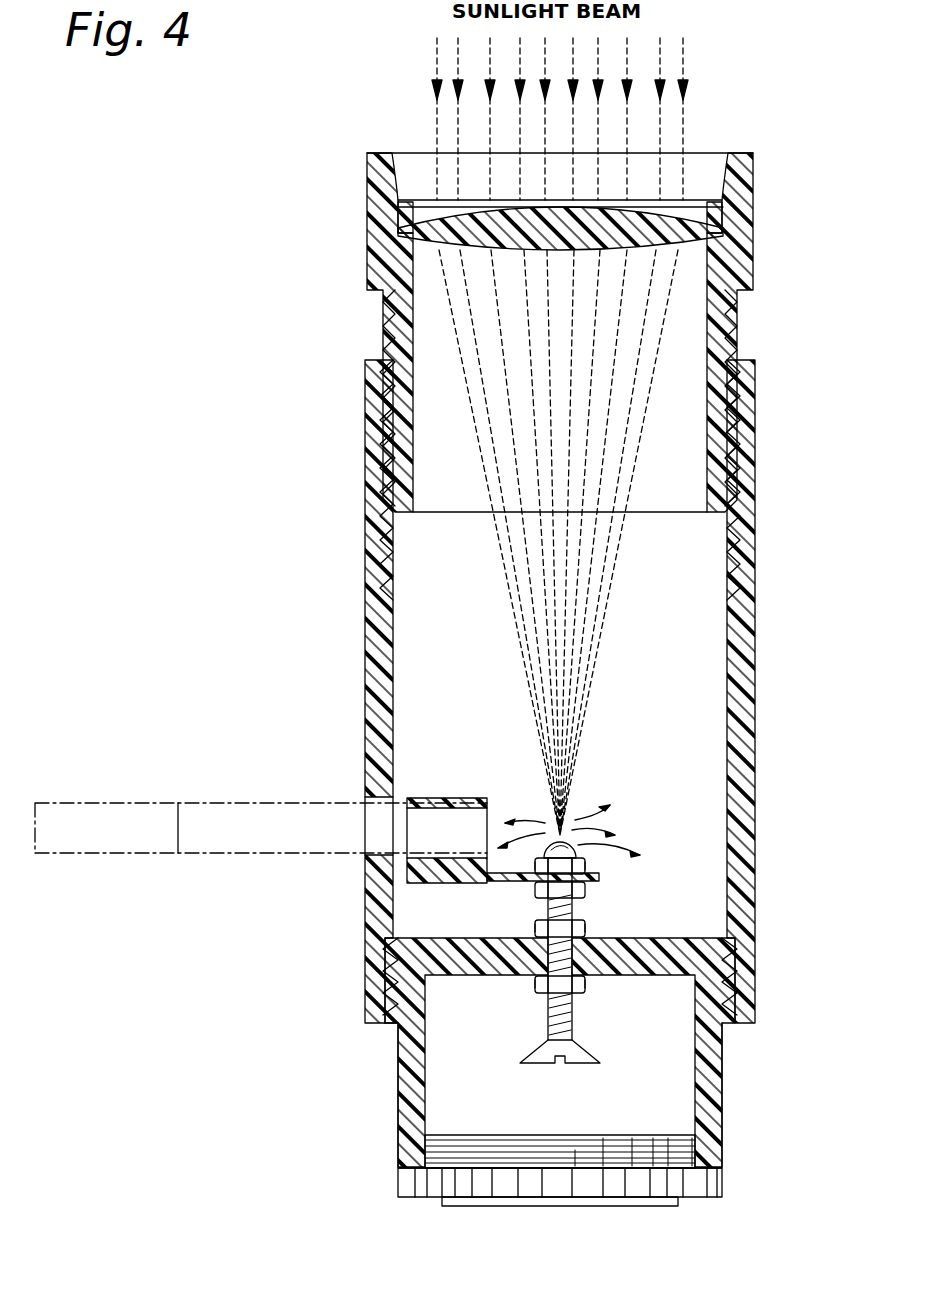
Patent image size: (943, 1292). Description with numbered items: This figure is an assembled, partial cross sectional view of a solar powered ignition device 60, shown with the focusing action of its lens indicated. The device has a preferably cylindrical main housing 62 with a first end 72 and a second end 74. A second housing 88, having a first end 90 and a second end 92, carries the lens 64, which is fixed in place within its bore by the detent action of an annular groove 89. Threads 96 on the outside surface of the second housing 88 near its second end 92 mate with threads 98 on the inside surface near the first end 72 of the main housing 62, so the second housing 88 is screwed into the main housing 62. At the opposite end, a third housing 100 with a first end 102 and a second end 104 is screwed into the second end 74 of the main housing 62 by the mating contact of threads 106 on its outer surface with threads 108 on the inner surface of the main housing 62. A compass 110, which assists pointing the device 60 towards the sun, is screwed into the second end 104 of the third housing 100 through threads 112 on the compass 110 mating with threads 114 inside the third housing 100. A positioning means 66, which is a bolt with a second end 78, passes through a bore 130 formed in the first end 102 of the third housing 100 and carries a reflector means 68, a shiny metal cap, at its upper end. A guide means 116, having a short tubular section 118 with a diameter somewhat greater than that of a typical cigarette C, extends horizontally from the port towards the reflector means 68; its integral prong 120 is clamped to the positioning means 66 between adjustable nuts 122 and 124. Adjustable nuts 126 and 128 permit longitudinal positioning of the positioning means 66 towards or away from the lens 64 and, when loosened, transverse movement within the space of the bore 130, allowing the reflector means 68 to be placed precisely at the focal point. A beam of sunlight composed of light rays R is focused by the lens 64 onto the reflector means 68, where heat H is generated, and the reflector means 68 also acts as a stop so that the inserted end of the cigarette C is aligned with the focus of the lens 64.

The powered ignition device 60 is at (605, 691).
The main housing 62 is at (757, 670).
The lens 64 is at (690, 215).
The positioning means 66 is at (580, 905).
The reflector means 68 is at (575, 835).
The first end of the main housing 72 is at (742, 362).
The second end of the main housing 74 is at (737, 1032).
The second end of the positioning means 78 is at (545, 1042).
The second housing 88 is at (755, 248).
The annular groove 89 is at (400, 222).
The first end of the second housing 90 is at (745, 160).
The second end of the second housing 92 is at (730, 505).
The threads 96 is at (385, 355).
The threads 98 is at (392, 545).
The third housing 100 is at (722, 1100).
The first end of the third housing 102 is at (690, 936).
The second end of the third housing 104 is at (722, 1175).
The threads 106 is at (398, 1025).
The threads 108 is at (390, 940).
The compass 110 is at (490, 1158).
The threads 112 is at (405, 1167).
The threads 114 is at (425, 1140).
The guide means 116 is at (440, 800).
The short tubular section 118 is at (410, 870).
The prong 120 is at (535, 882).
The adjustable nut 122 is at (590, 868).
The adjustable nut 124 is at (590, 890).
The adjustable nut 126 is at (590, 928).
The adjustable nut 128 is at (585, 985).
The bore 130 is at (588, 985).
The light rays R is at (435, 62).
The heat H is at (524, 815).
The cigarette C is at (128, 803).